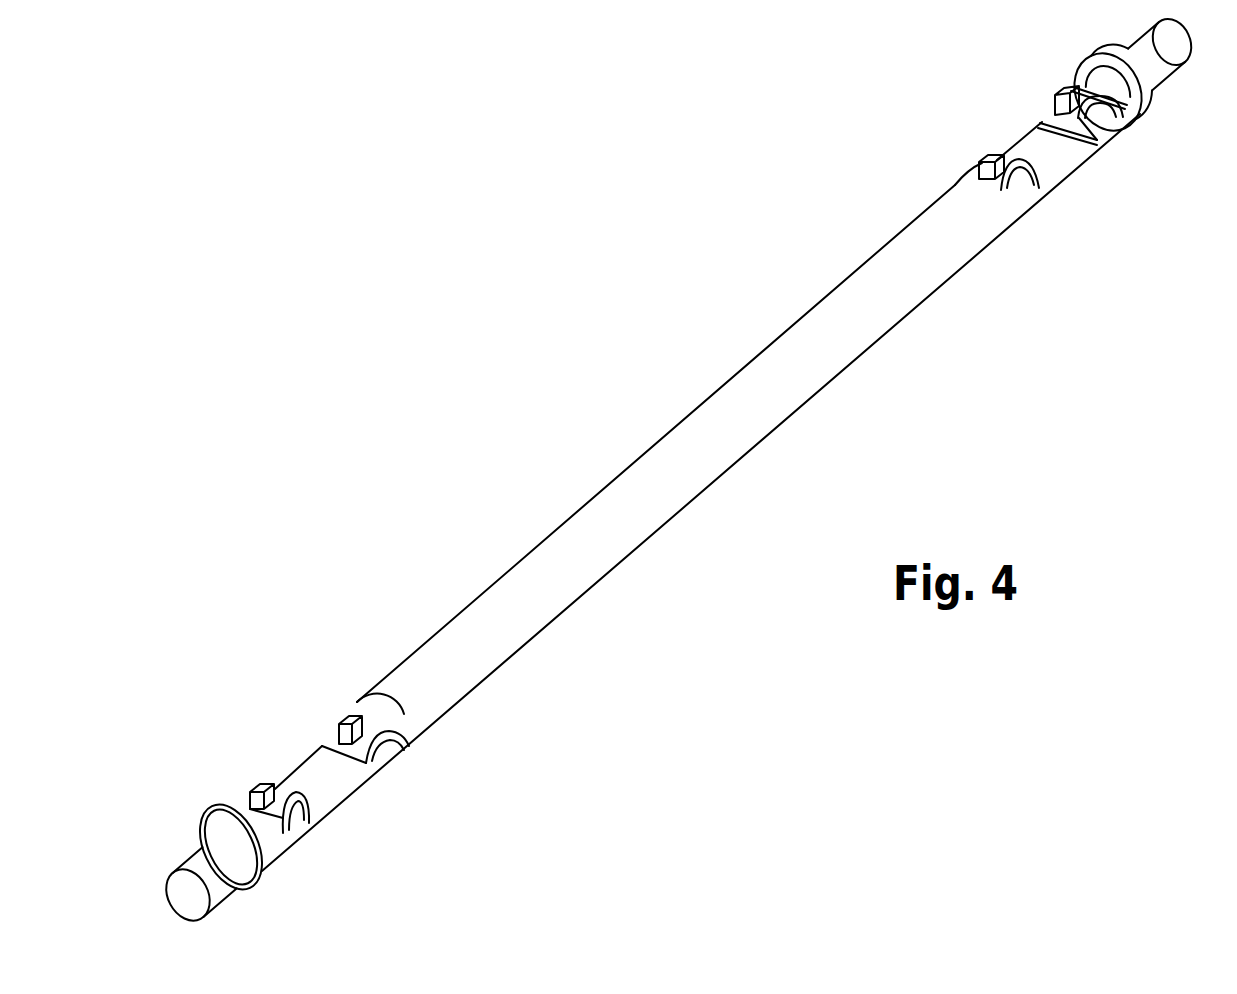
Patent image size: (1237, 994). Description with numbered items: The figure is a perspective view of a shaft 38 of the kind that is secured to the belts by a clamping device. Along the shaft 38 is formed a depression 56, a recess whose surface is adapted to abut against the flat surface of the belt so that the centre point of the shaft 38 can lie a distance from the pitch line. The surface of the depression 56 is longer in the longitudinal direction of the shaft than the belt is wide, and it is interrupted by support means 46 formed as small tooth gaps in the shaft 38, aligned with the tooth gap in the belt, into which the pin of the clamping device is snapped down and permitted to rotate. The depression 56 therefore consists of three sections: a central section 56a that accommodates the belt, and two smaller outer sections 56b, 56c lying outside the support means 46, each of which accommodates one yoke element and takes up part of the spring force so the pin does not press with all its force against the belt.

The shaft 38 is at (560, 550).
The support means 46 is at (985, 160).
The depression 56 is at (351, 820).
The central section 56a is at (323, 780).
The outer section 56b is at (287, 823).
The outer section 56c is at (389, 724).